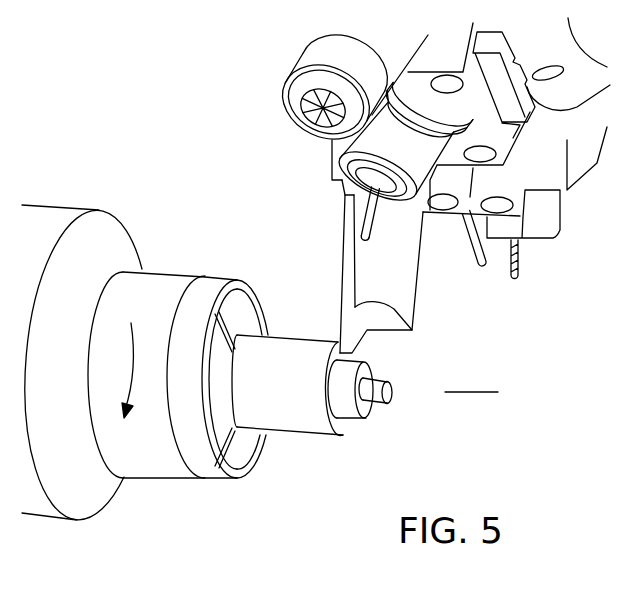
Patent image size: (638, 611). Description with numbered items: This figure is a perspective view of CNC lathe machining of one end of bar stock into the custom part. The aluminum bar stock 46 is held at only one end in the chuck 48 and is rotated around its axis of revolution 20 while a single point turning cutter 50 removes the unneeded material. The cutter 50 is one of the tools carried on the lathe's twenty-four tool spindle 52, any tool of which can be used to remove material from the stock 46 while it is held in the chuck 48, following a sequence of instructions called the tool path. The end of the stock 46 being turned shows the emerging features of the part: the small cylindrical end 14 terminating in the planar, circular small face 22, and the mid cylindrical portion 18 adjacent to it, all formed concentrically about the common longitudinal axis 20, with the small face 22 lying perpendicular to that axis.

The small cylindrical end 14 is at (372, 398).
The mid cylindrical portion 18 is at (347, 423).
The longitudinal axis 20 is at (483, 392).
The small face 22 is at (387, 390).
The bar stock 46 is at (280, 410).
The chuck 48 is at (205, 302).
The single point turning cutter 50 is at (345, 298).
The tool spindle 52 is at (545, 178).